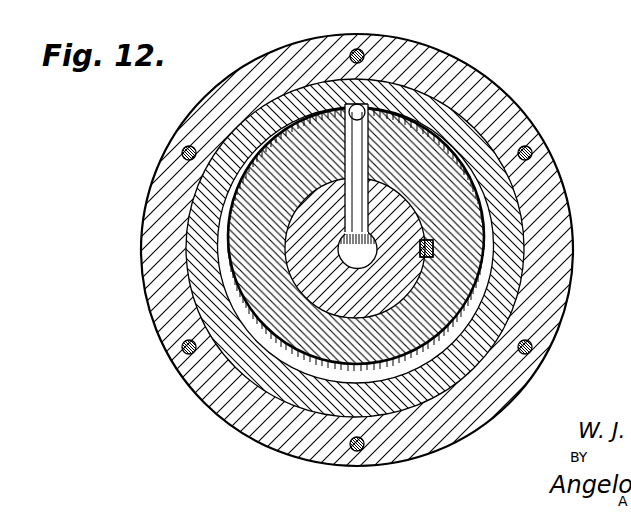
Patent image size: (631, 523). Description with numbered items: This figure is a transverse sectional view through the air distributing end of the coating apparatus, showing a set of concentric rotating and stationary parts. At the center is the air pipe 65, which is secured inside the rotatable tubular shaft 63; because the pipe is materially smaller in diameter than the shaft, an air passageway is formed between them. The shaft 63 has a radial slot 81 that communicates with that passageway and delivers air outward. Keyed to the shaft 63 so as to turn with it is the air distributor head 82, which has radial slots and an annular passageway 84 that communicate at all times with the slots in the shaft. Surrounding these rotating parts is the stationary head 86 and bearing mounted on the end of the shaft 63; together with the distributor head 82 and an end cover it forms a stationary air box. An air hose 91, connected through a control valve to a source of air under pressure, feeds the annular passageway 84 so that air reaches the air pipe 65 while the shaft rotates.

The rotatable tubular shaft 63 is at (390, 293).
The air pipe 65 is at (343, 252).
The radial slot 81 is at (347, 200).
The air distributor head 82 is at (515, 261).
The annular passageway 84 is at (483, 208).
The stationary head 86 is at (487, 86).
The air hose 91 is at (364, 104).